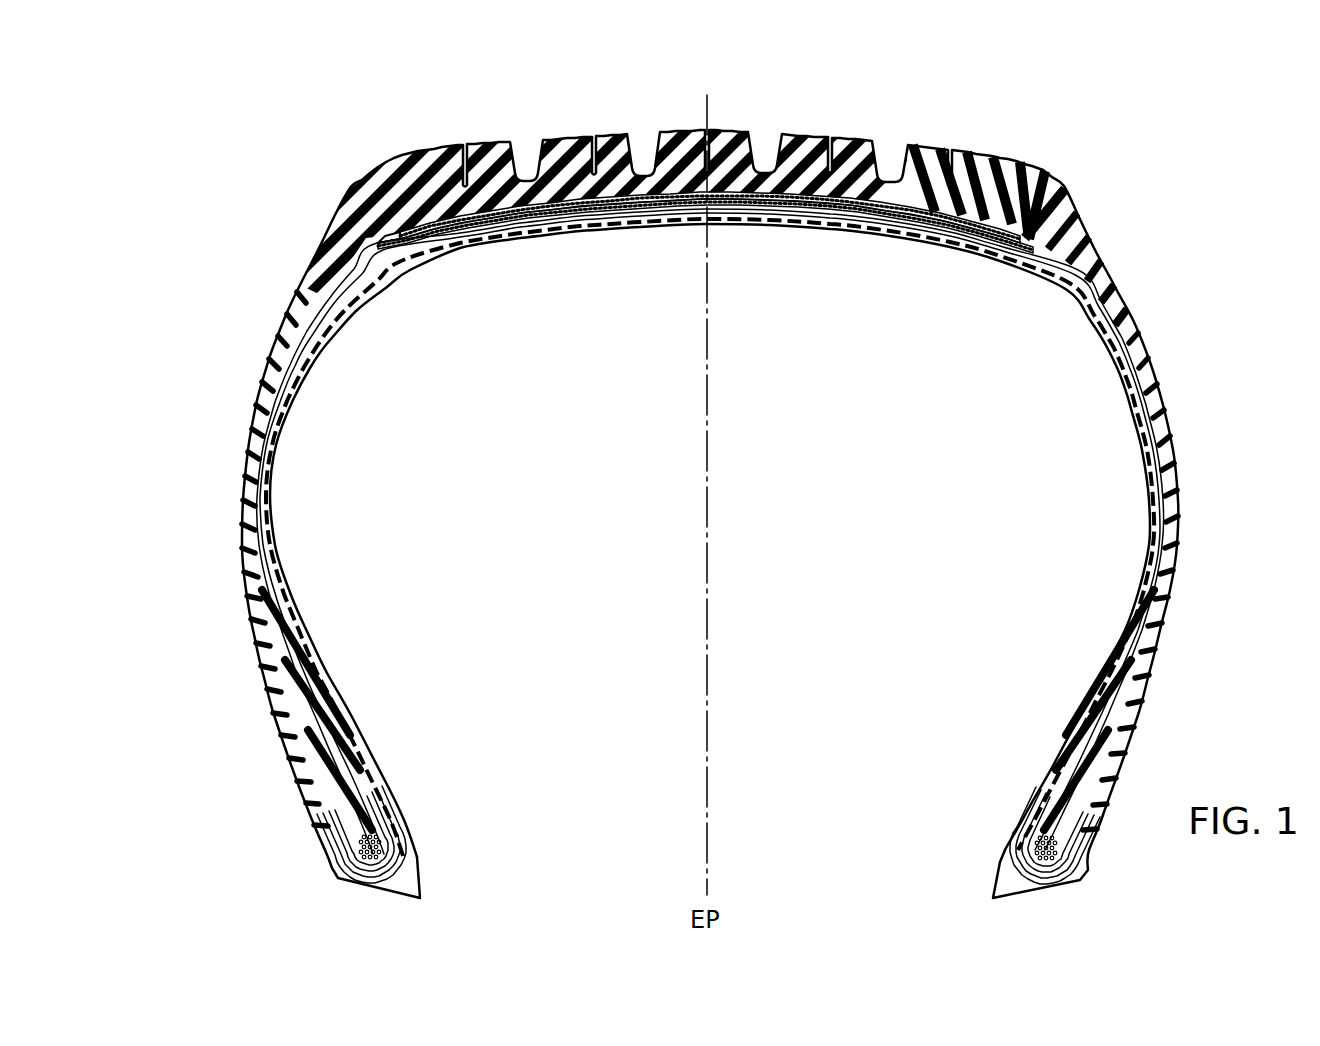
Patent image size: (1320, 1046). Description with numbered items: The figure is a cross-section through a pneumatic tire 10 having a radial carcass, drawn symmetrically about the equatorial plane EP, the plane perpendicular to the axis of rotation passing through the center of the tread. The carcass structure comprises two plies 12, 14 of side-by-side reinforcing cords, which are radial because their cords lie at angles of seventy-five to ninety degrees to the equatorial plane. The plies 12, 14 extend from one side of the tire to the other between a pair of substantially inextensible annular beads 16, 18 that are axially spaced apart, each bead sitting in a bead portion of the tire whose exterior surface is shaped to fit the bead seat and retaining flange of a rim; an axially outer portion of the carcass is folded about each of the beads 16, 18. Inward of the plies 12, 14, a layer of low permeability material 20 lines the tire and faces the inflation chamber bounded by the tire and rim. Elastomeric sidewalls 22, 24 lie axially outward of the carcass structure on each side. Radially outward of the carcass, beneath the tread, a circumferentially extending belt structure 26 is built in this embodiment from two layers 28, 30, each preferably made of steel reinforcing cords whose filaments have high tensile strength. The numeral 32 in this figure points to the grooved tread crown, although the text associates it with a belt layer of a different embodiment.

The pneumatic tire 10 is at (1114, 146).
The ply 12 is at (297, 628).
The ply 14 is at (281, 594).
The annular bead 16 is at (382, 838).
The annular bead 18 is at (1034, 846).
The layer of low permeability material 20 is at (272, 494).
The elastomeric sidewall 22 is at (245, 554).
The elastomeric sidewall 24 is at (1182, 562).
The belt structure 26 is at (394, 217).
The belt layer 28 is at (522, 214).
The belt layer 30 is at (601, 202).
The belt layer 32 is at (718, 136).